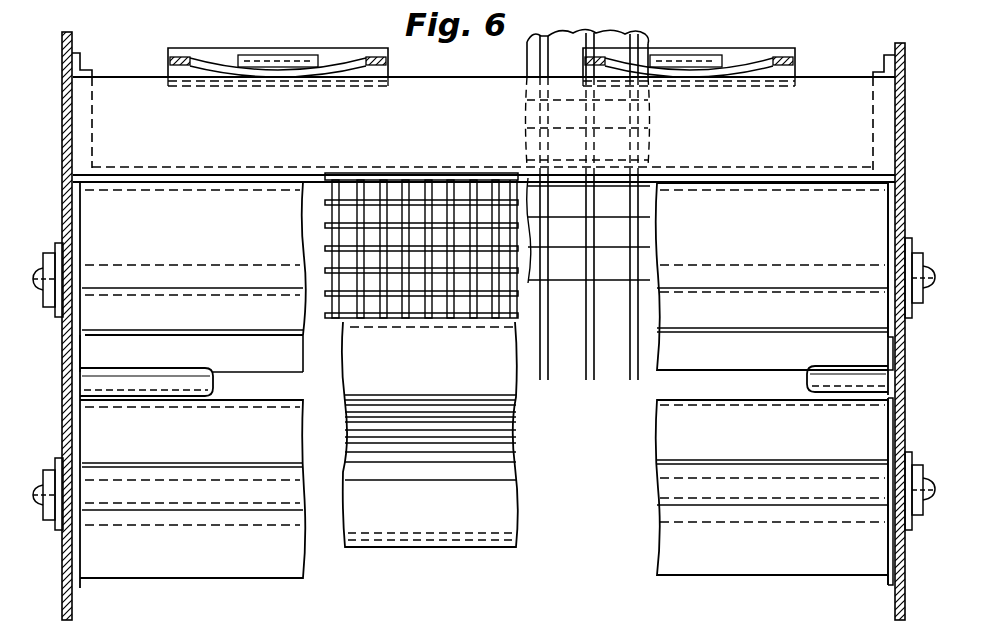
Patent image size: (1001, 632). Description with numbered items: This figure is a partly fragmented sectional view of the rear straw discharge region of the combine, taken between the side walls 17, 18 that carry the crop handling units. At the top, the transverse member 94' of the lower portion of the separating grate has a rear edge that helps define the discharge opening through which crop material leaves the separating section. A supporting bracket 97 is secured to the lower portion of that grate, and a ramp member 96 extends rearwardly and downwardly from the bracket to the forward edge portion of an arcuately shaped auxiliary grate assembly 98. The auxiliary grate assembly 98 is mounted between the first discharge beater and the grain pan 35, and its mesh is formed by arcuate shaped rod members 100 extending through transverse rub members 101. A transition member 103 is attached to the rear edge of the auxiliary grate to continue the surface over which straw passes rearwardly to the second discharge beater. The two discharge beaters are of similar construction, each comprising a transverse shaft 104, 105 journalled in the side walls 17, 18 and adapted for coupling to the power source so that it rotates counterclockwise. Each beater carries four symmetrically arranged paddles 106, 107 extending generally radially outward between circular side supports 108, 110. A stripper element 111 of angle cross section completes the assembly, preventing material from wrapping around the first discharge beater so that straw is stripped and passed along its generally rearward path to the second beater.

The side wall 17 is at (905, 127).
The side wall 18 is at (62, 127).
The grain pan 35 is at (597, 396).
The transverse member 94' is at (811, 50).
The ramp member 96 is at (786, 124).
The supporting bracket 97 is at (689, 56).
The auxiliary grate assembly 98 is at (405, 237).
The arcuate shaped rod members 100 is at (428, 190).
The transverse rub members 101 is at (325, 214).
The transition member 103 is at (471, 506).
The transverse shaft 104 is at (926, 278).
The transverse shaft 105 is at (926, 490).
The paddles 106 is at (778, 224).
The paddles 107 is at (798, 438).
The circular side support 108 is at (83, 236).
The circular side support 110 is at (888, 232).
The stripper element 111 is at (207, 370).